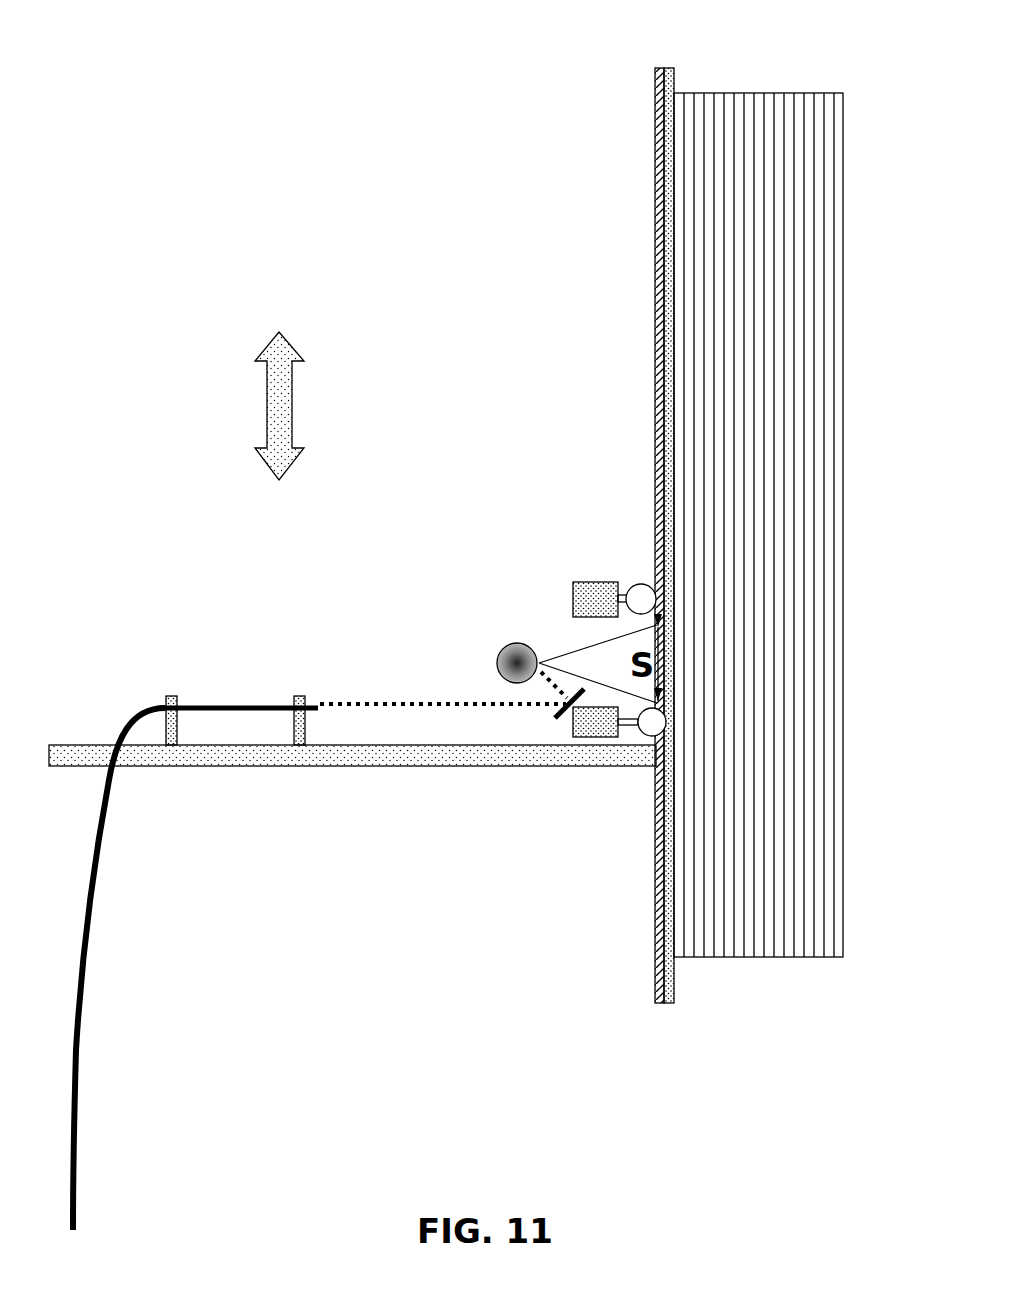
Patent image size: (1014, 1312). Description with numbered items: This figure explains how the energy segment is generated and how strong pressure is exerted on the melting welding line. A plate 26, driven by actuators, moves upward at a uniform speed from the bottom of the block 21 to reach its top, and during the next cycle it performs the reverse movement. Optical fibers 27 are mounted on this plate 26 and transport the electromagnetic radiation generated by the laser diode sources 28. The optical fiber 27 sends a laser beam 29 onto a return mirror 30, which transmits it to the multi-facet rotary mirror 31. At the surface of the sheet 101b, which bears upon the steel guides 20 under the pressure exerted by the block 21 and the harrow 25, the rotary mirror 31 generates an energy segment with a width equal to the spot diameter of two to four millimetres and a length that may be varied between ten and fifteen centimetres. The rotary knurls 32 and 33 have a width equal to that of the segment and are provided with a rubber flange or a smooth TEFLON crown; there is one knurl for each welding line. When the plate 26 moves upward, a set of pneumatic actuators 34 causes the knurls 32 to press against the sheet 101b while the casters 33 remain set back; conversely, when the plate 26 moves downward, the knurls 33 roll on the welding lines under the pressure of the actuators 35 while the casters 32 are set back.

The block 21 is at (758, 91).
The sheet 101b is at (661, 326).
The steel guides 20 is at (643, 549).
The harrow 25 is at (679, 972).
The plate 26 is at (83, 744).
The optical fibers 27 is at (249, 699).
The laser diode sources 28 is at (140, 1190).
The laser beam 29 is at (357, 699).
The return mirror 30 is at (551, 724).
The multi-facet rotary mirror 31 is at (507, 641).
The rotary knurls 32 is at (649, 740).
The rotary knurls 33 is at (634, 579).
The pneumatic actuators 34 is at (604, 729).
The actuators 35 is at (586, 579).